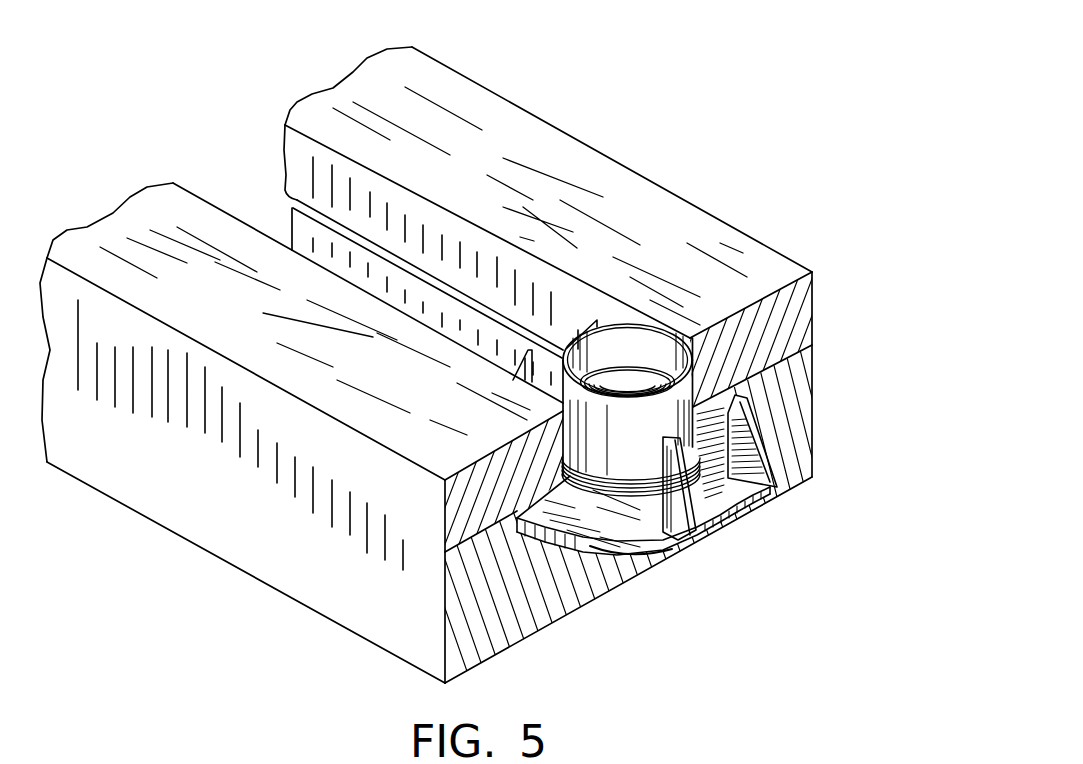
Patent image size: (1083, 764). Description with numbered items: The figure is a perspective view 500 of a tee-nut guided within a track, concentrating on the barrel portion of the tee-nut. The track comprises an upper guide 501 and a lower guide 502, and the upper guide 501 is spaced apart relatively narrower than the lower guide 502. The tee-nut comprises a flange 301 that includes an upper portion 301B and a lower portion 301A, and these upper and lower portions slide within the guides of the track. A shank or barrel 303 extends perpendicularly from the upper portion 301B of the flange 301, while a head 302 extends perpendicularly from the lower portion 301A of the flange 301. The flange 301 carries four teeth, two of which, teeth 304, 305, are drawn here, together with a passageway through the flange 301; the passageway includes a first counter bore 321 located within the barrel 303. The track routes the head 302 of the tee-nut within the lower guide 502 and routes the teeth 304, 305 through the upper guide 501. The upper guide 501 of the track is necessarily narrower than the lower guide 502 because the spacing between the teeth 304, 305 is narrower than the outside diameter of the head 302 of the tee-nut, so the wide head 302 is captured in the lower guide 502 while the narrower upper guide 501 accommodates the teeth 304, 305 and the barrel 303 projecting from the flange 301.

The perspective view 500 is at (667, 64).
The upper guide 501 is at (730, 360).
The lower guide 502 is at (510, 591).
The flange 301 is at (746, 515).
The lower portion of the flange 301A is at (567, 552).
The upper portion of the flange 301B is at (753, 405).
The head 302 is at (643, 542).
The shank or barrel 303 is at (622, 432).
The tooth 304 is at (748, 448).
The tooth 305 is at (683, 483).
The first counter bore 321 is at (626, 338).